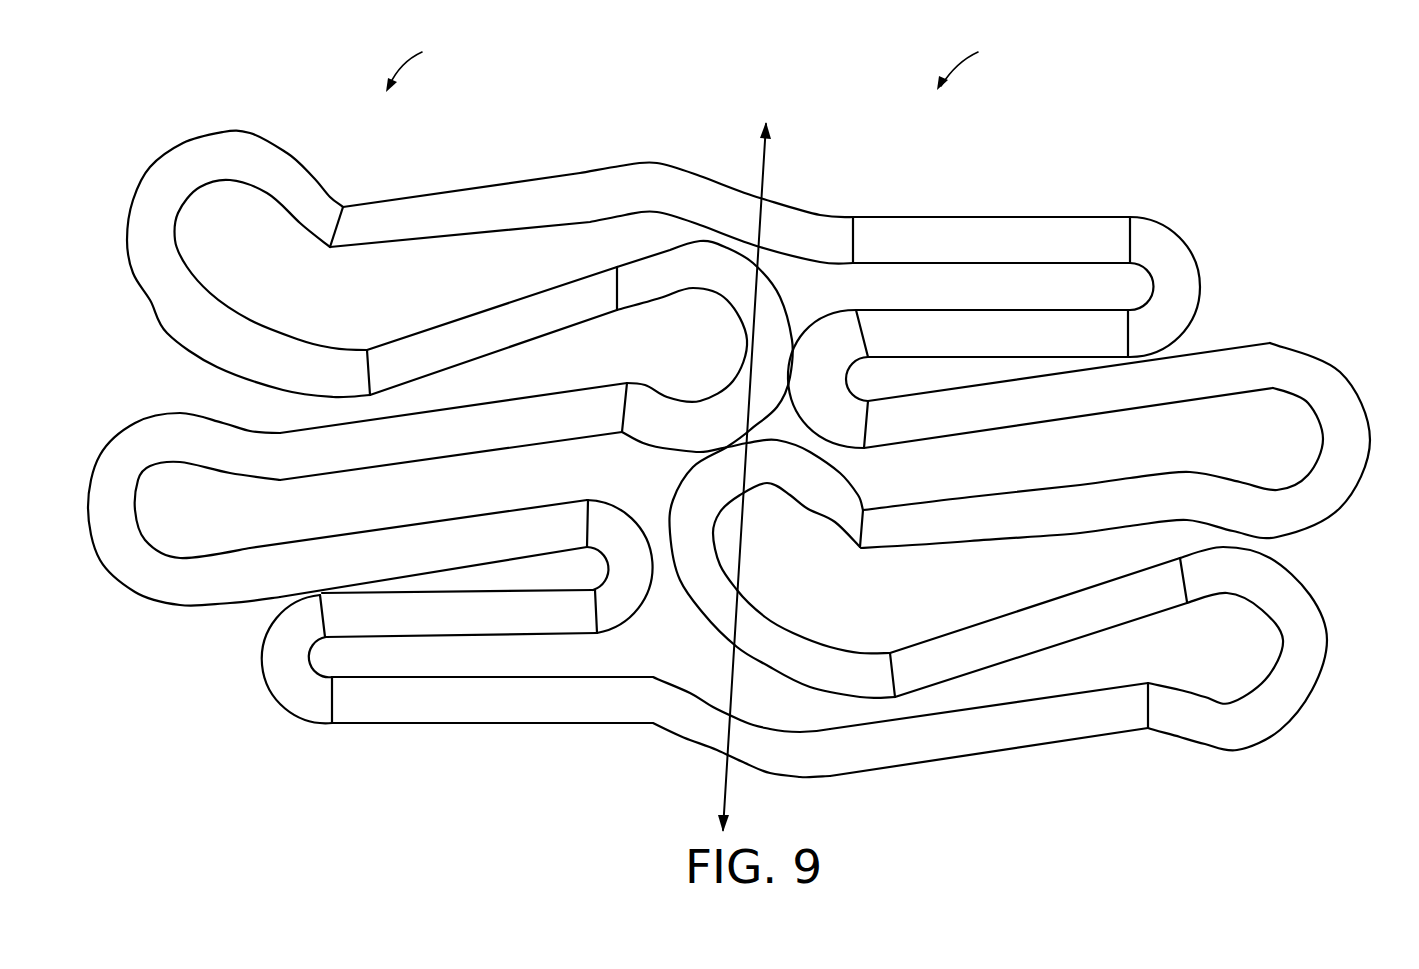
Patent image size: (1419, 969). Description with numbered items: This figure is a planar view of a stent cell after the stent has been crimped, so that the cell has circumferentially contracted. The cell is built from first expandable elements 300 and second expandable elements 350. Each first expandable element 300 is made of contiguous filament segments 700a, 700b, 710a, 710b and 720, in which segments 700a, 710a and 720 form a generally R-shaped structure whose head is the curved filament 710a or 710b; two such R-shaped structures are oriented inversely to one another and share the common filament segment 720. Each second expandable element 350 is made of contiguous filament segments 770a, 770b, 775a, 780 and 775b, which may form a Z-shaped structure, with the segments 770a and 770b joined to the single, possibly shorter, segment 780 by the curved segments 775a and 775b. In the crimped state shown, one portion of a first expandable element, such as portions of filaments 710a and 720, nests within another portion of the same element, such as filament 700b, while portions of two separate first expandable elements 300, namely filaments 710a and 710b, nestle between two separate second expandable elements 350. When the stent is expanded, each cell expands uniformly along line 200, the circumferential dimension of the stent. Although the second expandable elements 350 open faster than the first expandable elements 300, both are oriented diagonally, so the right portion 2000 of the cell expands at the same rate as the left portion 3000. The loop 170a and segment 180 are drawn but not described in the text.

The left portion of the cell 3000 is at (442, 59).
The right portion of the cell 2000 is at (995, 58).
The first expandable element 300 is at (139, 152).
The second expandable element 350 is at (1232, 200).
The end loop 170a is at (1217, 373).
The return band segment 180 is at (403, 623).
The line 200 is at (755, 477).
The filament segment 700a is at (510, 198).
The filament segment 700b is at (302, 446).
The filament segment 710a is at (264, 157).
The filament segment 710b is at (770, 322).
The filament segment 720 is at (477, 337).
The filament segment 770a is at (242, 580).
The filament segment 770b is at (1077, 243).
The curved segment 775a is at (625, 603).
The curved segment 775b is at (1170, 313).
The filament segment 780 is at (1070, 337).